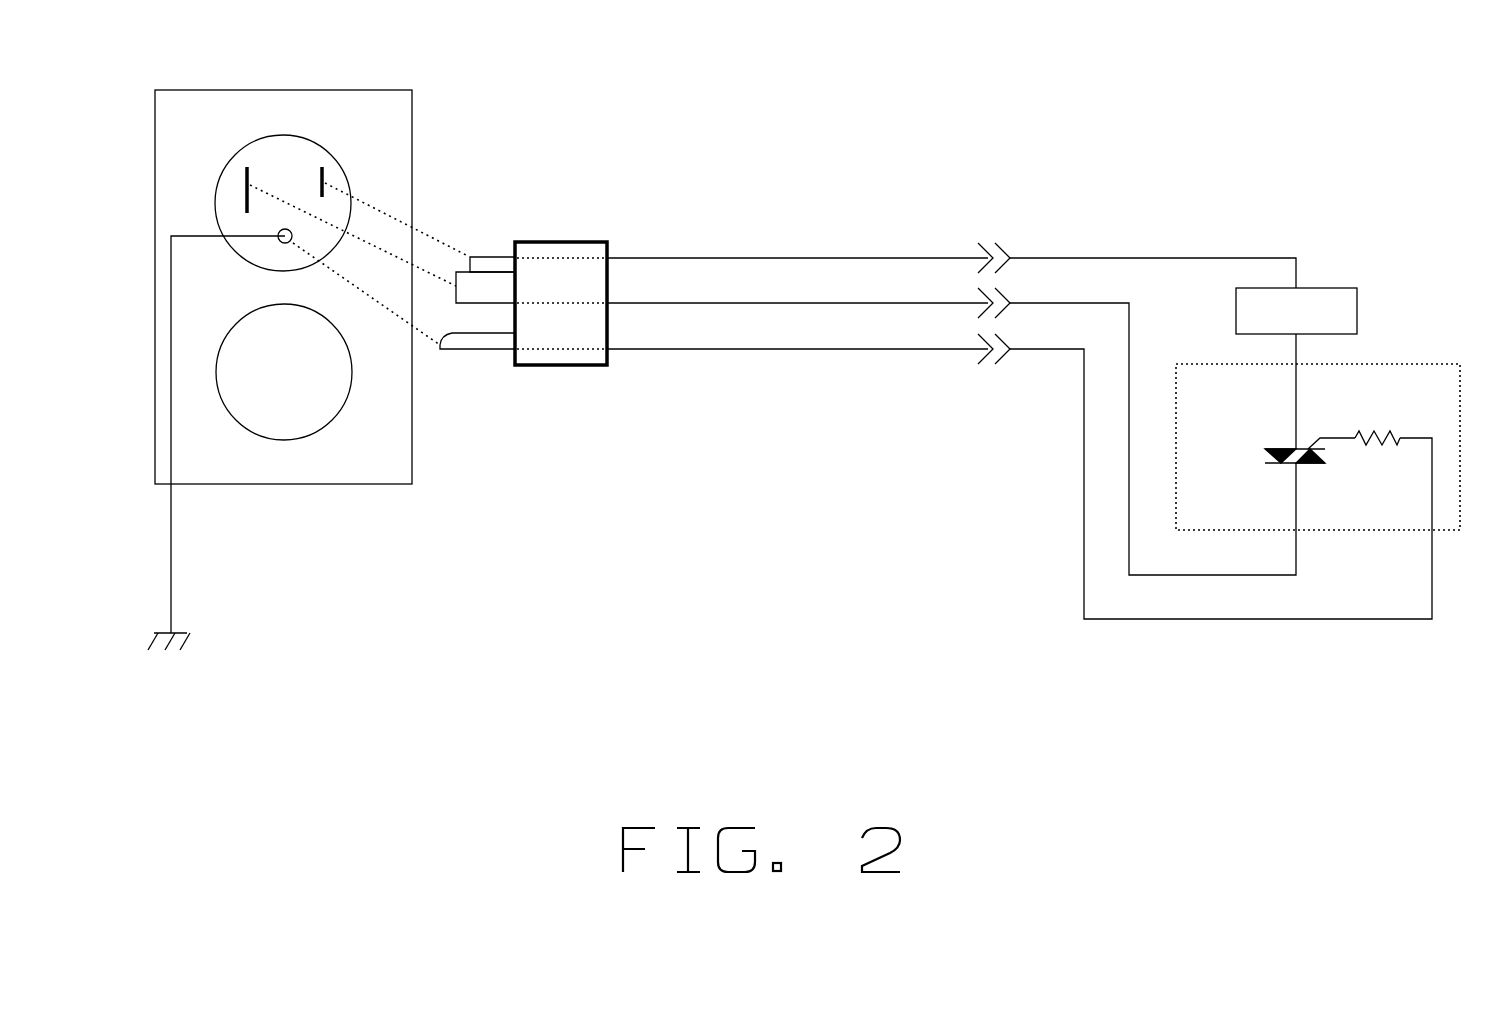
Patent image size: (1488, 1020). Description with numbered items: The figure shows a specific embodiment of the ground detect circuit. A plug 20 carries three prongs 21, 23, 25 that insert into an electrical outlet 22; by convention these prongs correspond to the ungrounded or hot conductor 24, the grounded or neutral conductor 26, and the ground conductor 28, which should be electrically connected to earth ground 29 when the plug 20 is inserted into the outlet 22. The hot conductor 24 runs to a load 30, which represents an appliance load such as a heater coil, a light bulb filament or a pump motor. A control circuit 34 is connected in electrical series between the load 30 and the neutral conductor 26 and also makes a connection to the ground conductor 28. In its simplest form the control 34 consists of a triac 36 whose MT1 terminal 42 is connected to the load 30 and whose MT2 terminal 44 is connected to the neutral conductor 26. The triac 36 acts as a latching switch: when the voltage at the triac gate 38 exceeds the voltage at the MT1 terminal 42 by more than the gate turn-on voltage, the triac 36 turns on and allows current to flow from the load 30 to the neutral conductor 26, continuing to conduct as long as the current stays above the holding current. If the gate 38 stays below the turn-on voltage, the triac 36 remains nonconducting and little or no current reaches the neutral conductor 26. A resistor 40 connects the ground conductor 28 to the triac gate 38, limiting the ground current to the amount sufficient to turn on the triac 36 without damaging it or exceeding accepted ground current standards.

The plug 20 is at (562, 228).
The prong 21 is at (460, 328).
The electrical outlet 22 is at (425, 91).
The prong 23 is at (452, 292).
The ungrounded conductor 24 is at (860, 243).
The prong 25 is at (494, 253).
The grounded conductor 26 is at (860, 290).
The ground conductor 28 is at (842, 363).
The earth ground 29 is at (198, 633).
The load 30 is at (1372, 289).
The control circuit 34 is at (1459, 350).
The triac 36 is at (1267, 470).
The triac gate 38 is at (1325, 424).
The resistor 40 is at (1386, 453).
The MT1 terminal 42 is at (1280, 439).
The MT2 terminal 44 is at (1309, 484).